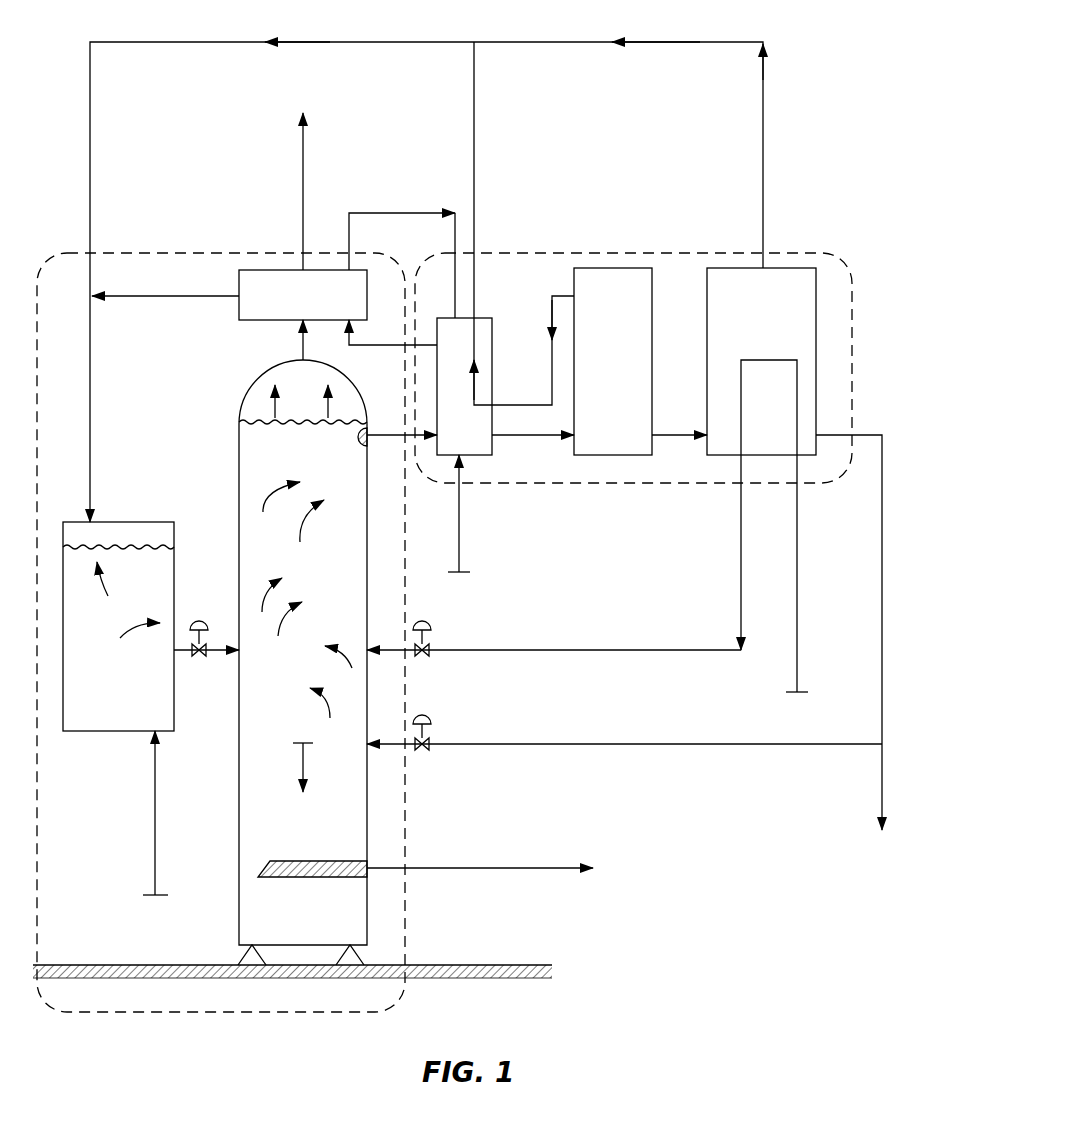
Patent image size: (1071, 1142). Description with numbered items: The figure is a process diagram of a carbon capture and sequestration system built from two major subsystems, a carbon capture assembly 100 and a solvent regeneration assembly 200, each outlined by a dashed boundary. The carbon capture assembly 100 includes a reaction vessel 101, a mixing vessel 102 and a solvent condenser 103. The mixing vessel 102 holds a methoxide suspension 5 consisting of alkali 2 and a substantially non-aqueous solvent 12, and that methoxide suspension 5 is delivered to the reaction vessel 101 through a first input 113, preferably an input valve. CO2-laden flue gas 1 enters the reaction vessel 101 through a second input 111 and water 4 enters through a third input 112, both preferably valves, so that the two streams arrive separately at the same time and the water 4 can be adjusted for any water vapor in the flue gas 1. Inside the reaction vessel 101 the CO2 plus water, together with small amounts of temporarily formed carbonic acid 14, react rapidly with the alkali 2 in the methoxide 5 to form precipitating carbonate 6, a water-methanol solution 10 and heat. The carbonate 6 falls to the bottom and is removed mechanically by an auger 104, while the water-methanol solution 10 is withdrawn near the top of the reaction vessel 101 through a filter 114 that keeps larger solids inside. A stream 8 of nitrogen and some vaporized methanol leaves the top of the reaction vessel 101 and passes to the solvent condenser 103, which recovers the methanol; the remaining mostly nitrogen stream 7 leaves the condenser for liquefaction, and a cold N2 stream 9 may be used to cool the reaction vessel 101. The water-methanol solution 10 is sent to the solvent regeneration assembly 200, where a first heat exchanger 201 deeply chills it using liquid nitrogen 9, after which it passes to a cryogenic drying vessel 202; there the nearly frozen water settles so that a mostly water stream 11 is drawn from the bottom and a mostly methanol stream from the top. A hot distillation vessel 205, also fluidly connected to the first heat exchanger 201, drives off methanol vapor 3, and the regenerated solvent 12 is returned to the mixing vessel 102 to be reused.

The CO2-laden flue gas 1 is at (797, 625).
The alkali 2 is at (155, 830).
The methanol vapor 3 is at (175, 296).
The water 4 is at (882, 725).
The methoxide suspension 5 is at (100, 580).
The carbonate 6 is at (303, 770).
The N2 stream 7 is at (303, 195).
The nitrogen and methanol stream 8 is at (303, 348).
The cold N2 stream 9 is at (400, 213).
The water-methanol solution 10 is at (300, 482).
The mostly water stream 11 is at (668, 437).
The substantially non-aqueous solvent 12 is at (163, 42).
The carbonic acid 14 is at (352, 668).
The carbon capture assembly 100 is at (412, 912).
The reaction vessel 101 is at (239, 470).
The mixing vessel 102 is at (130, 732).
The solvent condenser 103 is at (268, 270).
The auger 104 is at (295, 861).
The second input 111 is at (432, 618).
The third input 112 is at (432, 712).
The first input 113 is at (199, 618).
The filter 114 is at (358, 440).
The solvent regeneration assembly 200 is at (610, 253).
The first heat exchanger 201 is at (492, 320).
The cryogenic drying vessel 202 is at (652, 288).
The hot distillation vessel 205 is at (707, 336).